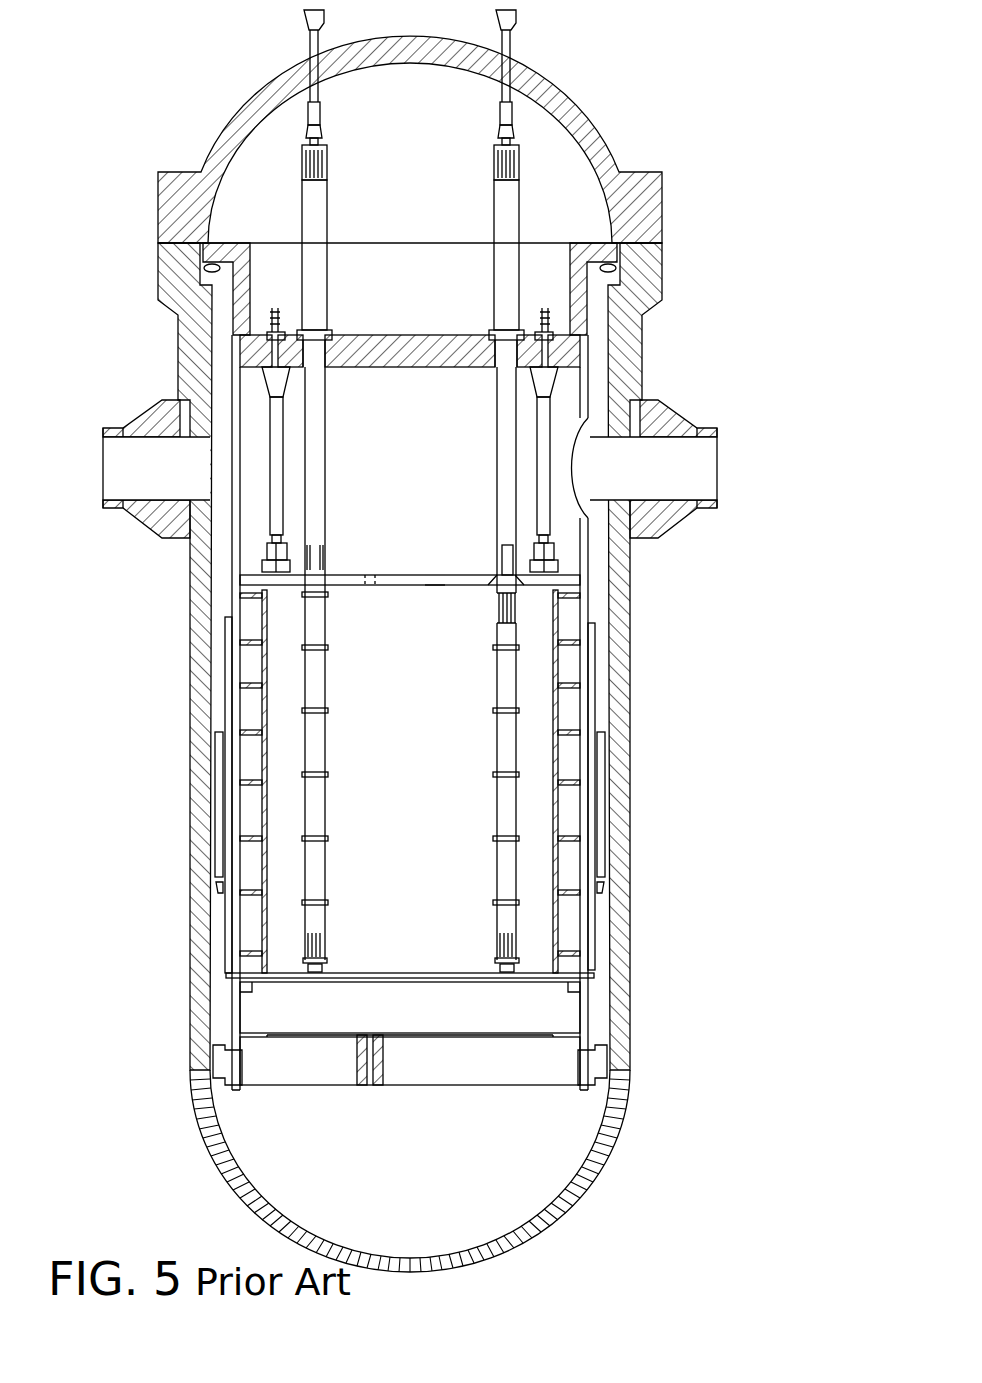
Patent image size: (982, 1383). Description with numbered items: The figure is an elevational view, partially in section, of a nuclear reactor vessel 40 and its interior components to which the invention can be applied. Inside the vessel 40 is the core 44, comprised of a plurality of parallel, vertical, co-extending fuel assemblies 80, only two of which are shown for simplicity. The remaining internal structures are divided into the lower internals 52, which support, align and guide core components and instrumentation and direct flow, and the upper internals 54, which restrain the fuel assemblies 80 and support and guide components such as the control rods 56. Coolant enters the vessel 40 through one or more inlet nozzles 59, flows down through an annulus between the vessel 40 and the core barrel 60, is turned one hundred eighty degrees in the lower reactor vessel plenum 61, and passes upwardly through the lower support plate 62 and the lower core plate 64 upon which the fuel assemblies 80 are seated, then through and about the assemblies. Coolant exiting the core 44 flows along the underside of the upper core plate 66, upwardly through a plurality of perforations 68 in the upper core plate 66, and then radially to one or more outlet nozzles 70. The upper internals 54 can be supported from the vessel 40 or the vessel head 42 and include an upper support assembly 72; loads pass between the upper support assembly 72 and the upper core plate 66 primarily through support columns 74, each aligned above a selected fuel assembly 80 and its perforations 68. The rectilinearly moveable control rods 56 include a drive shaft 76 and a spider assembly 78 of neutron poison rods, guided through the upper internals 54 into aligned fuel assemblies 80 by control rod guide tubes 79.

The reactor vessel 40 is at (632, 652).
The vessel head 42 is at (663, 213).
The core 44 is at (426, 774).
The lower internals 52 is at (426, 1019).
The upper internals 54 is at (428, 441).
The control rods 56 is at (500, 582).
The inlet nozzles 59 is at (140, 412).
The core barrel 60 is at (210, 575).
The lower reactor vessel plenum 61 is at (573, 1138).
The lower support plate 62 is at (450, 1073).
The lower core plate 64 is at (472, 973).
The upper core plate 66 is at (433, 588).
The perforations 68 is at (370, 575).
The outlet nozzles 70 is at (683, 415).
The upper support assembly 72 is at (580, 242).
The support columns 74 is at (283, 462).
The drive shaft 76 is at (498, 548).
The spider assembly 78 is at (498, 573).
The control rod guide tubes 79 is at (498, 495).
The fuel assemblies 80 is at (327, 682).